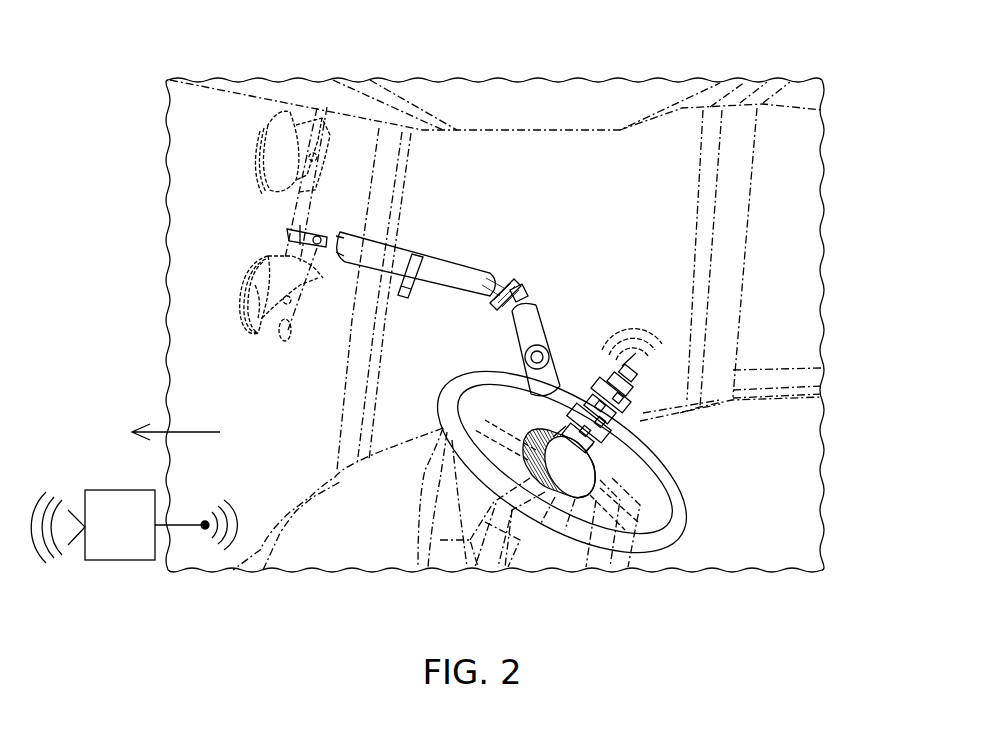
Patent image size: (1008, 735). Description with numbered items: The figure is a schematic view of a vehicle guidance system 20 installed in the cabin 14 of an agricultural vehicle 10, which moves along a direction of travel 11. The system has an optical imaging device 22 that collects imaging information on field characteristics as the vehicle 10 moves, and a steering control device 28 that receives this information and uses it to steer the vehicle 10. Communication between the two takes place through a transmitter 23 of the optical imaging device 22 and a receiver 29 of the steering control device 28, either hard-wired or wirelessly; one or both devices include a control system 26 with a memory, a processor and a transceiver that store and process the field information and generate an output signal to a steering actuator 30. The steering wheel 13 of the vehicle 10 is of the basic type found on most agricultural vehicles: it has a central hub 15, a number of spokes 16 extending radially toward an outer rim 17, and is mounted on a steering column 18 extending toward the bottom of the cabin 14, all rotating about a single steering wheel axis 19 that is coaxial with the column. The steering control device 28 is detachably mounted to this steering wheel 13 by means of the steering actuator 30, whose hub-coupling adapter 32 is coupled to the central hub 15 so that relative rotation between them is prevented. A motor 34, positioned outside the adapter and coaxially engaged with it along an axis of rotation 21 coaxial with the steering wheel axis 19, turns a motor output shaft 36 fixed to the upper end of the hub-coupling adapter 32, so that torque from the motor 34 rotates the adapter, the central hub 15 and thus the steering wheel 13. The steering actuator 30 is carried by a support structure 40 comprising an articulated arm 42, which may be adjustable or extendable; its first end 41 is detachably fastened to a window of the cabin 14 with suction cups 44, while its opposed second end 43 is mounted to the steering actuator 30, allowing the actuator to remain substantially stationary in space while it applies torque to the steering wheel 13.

The agricultural vehicle 10 is at (782, 80).
The direction of travel 11 is at (190, 432).
The steering wheel 13 is at (478, 468).
The cabin 14 is at (397, 158).
The central hub 15 is at (563, 480).
The spokes 16 is at (490, 430).
The outer rim 17 is at (687, 532).
The steering column 18 is at (505, 502).
The steering wheel axis 19 is at (647, 347).
The axis of rotation 21 is at (632, 339).
The vehicle guidance system 20 is at (577, 276).
The optical imaging device 22 is at (93, 526).
The transmitter 23 is at (186, 523).
The control system 26 is at (630, 385).
The steering control device 28 is at (613, 483).
The receiver 29 is at (638, 374).
The steering actuator 30 is at (574, 493).
The hub-coupling adapter 32 is at (545, 433).
The motor 34 is at (598, 385).
The motor output shaft 36 is at (580, 450).
The support structure 40 is at (406, 310).
The first end 41 is at (343, 236).
The articulated arm 42 is at (497, 282).
The second end 43 is at (563, 393).
The suction cups 44 is at (278, 127).